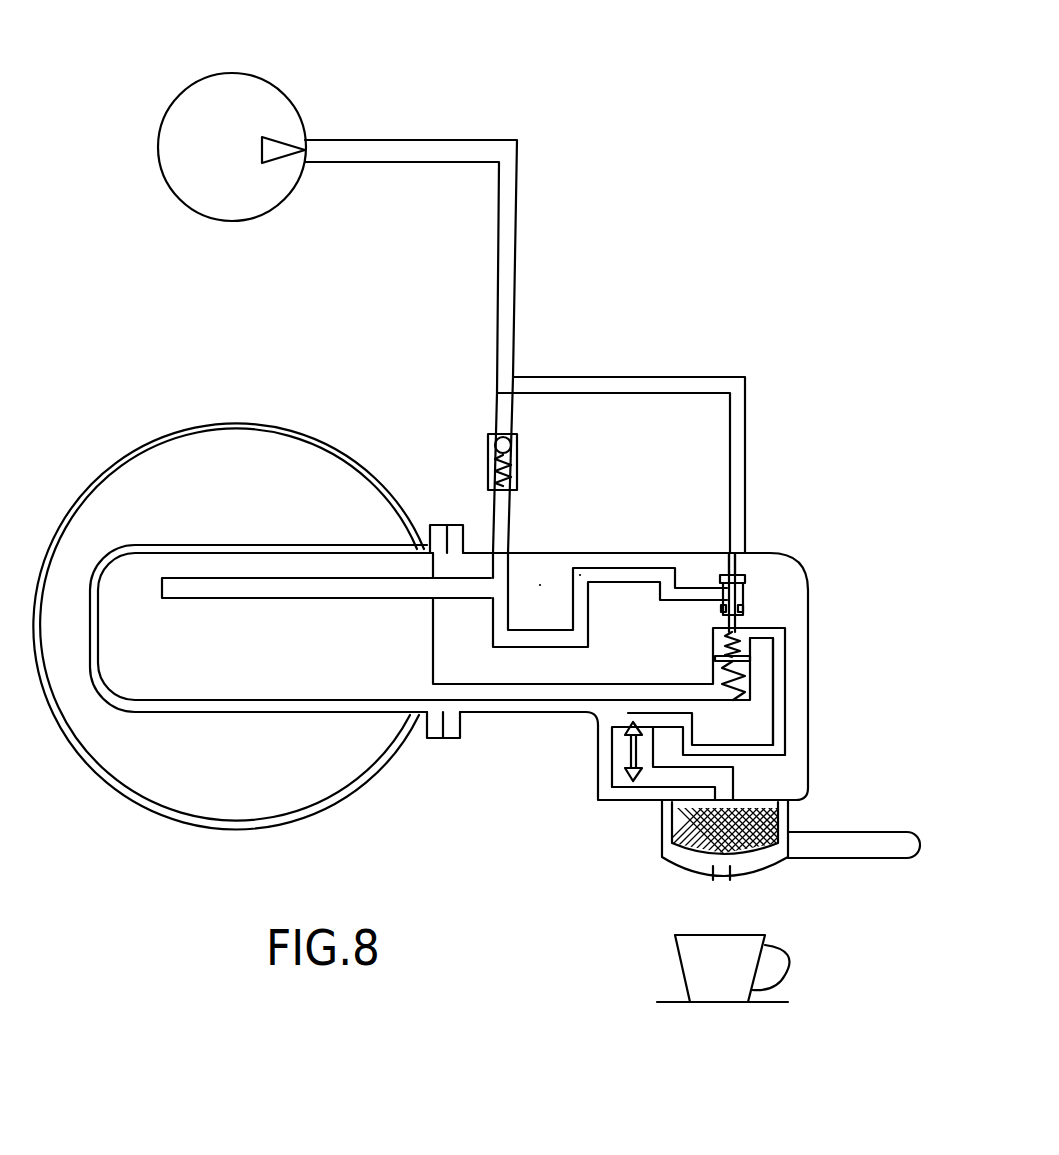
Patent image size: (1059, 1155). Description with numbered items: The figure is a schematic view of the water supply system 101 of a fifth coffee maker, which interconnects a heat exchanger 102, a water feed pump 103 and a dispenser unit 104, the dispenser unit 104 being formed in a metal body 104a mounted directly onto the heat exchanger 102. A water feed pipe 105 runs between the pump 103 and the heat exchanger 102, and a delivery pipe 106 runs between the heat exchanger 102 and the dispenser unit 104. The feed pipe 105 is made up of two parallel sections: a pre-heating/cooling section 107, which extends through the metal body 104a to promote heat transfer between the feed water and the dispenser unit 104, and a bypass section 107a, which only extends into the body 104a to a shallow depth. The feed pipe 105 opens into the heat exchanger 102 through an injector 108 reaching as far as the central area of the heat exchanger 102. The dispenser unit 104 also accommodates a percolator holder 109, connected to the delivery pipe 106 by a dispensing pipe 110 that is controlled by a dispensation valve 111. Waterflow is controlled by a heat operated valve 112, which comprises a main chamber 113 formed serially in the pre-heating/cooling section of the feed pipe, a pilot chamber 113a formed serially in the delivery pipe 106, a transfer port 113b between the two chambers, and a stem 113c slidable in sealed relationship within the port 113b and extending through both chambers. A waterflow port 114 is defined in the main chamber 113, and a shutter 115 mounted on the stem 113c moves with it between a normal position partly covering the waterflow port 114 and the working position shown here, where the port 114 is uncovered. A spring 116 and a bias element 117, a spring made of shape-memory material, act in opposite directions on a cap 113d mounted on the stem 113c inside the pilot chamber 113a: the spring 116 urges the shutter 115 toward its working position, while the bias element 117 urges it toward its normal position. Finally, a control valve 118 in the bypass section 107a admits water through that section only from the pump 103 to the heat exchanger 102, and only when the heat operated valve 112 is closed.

The water supply system 101 is at (656, 160).
The heat exchanger 102 is at (367, 720).
The water feed pump 103 is at (277, 106).
The dispenser unit 104 is at (580, 762).
The metal body 104a is at (533, 580).
The water feed pipe 105 is at (507, 208).
The delivery pipe 106 is at (537, 697).
The pre-heating/cooling section 107 is at (610, 573).
The bypass section 107a is at (495, 508).
The injector 108 is at (238, 585).
The percolator holder 109 is at (773, 847).
The dispensing pipe 110 is at (770, 750).
The dispensation valve 111 is at (628, 780).
The heat operated valve 112 is at (762, 561).
The main chamber 113 is at (727, 597).
The pilot chamber 113a is at (716, 648).
The transfer port 113b is at (737, 613).
The stem 113c is at (738, 596).
The cap 113d is at (747, 664).
The waterflow port 114 is at (727, 573).
The shutter 115 is at (733, 573).
The spring 116 is at (745, 654).
The bias element 117 is at (752, 662).
The control valve 118 is at (492, 438).